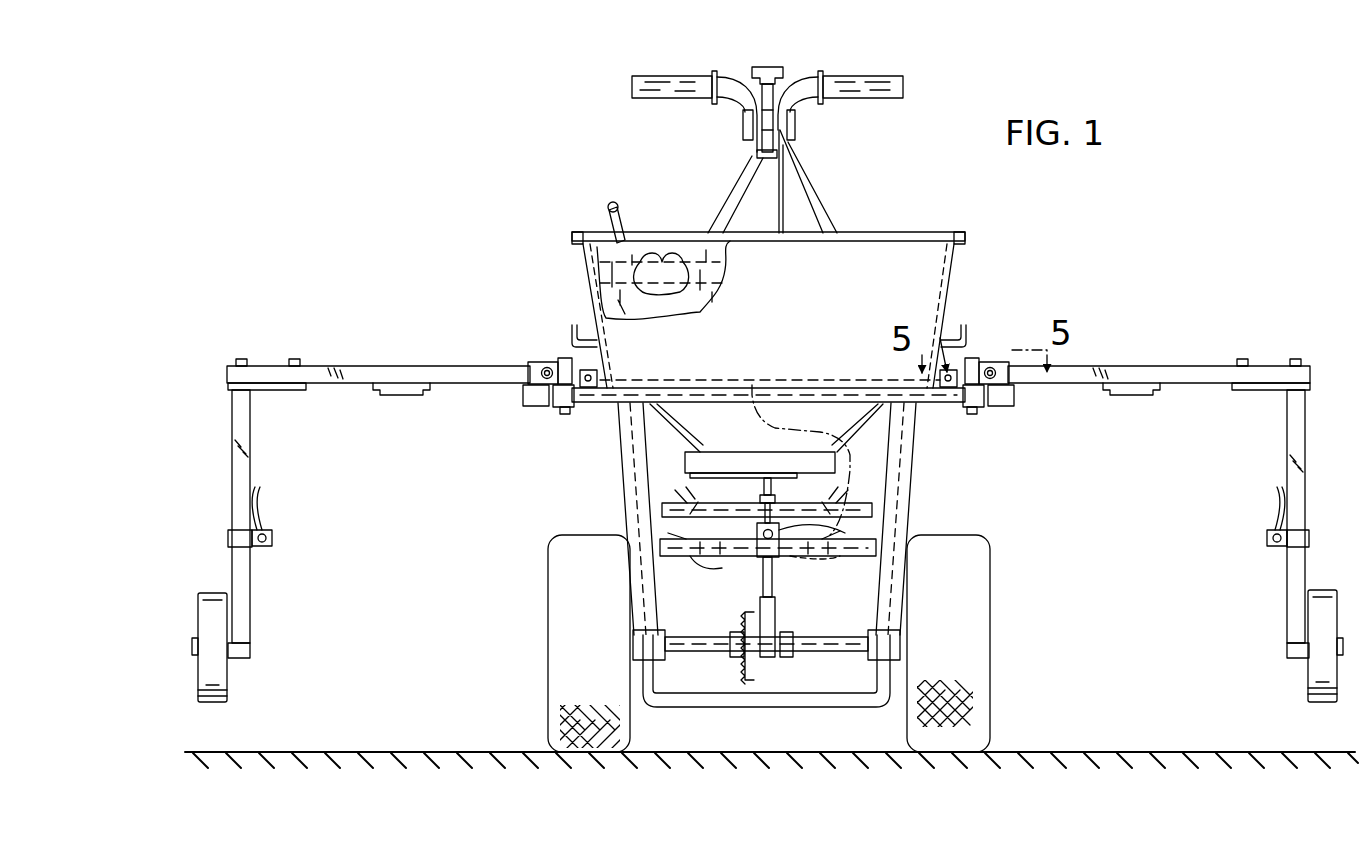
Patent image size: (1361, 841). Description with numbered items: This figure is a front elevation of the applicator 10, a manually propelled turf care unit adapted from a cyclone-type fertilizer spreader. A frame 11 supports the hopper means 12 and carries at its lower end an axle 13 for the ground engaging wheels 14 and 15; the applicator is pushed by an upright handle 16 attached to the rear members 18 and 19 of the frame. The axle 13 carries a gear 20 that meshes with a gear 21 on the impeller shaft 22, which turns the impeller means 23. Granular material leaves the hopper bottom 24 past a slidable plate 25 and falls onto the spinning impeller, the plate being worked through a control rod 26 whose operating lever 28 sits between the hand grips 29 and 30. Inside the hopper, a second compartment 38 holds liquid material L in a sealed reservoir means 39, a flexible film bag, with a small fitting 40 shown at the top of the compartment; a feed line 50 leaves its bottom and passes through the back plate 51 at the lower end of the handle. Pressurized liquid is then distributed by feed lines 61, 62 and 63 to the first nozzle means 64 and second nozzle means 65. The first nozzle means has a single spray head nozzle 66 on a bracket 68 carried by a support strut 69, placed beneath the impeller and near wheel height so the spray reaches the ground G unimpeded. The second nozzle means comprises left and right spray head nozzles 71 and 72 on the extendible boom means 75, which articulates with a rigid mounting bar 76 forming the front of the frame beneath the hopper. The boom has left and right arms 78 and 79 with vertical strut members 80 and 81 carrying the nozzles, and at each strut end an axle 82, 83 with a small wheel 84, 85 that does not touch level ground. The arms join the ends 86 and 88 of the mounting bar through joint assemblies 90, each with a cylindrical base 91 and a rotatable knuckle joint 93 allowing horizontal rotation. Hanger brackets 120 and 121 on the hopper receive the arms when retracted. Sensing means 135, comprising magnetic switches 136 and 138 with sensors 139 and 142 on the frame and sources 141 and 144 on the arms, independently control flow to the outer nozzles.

The applicator 10 is at (1100, 227).
The frame 11 is at (918, 470).
The hopper means 12 is at (902, 232).
The axle 13 is at (832, 645).
The ground engaging wheel 14 is at (548, 665).
The ground engaging wheel 15 is at (975, 675).
The upright handle 16 is at (808, 182).
The rear member 18 is at (640, 468).
The rear member 19 is at (903, 448).
The gear 20 is at (752, 680).
The gear 21 is at (786, 626).
The impeller shaft 22 is at (773, 590).
The impeller means 23 is at (878, 510).
The hopper bottom 24 is at (720, 462).
The slidable plate 25 is at (738, 490).
The control rod 26 is at (782, 213).
The operating lever 28 is at (776, 70).
The hand grip 29 is at (650, 92).
The hand grip 30 is at (880, 96).
The second compartment 38 is at (593, 236).
The sealed reservoir means 39 is at (683, 240).
The fill pipe 40 is at (616, 203).
The feed line 50 is at (768, 417).
The back plate 51 is at (660, 468).
The feed line 61 is at (260, 512).
The feed line 62 is at (790, 535).
The feed line 63 is at (1277, 512).
The first nozzle means 64 is at (752, 554).
The second nozzle means 65 is at (270, 556).
The spray head nozzle 66 is at (760, 528).
The bracket 68 is at (762, 556).
The support strut 69 is at (866, 548).
The left spray head nozzle 71 is at (275, 540).
The right spray head nozzle 72 is at (1265, 540).
The extendible boom means 75 is at (355, 364).
The rigid mounting bar 76 is at (711, 386).
The left arm 78 is at (447, 364).
The right arm 79 is at (1133, 364).
The strut member 80 is at (250, 440).
The strut member 81 is at (1295, 437).
The axle 82 is at (250, 645).
The axle 83 is at (1306, 646).
The wheel 84 is at (222, 690).
The wheel 85 is at (1312, 690).
The end of mounting bar 86 is at (581, 398).
The end of mounting bar 88 is at (889, 428).
The joint assembly 90 is at (546, 360).
The cylindrical base 91 is at (563, 405).
The rotatable knuckle joint 93 is at (528, 396).
The hanger bracket 120 is at (574, 322).
The hanger bracket 121 is at (965, 322).
The sensing means 135 is at (606, 380).
The magnetic switch 136 is at (592, 368).
The magnetic switch 138 is at (940, 338).
The sensor 139 is at (557, 393).
The source 141 is at (402, 396).
The sensor 142 is at (984, 392).
The source 144 is at (1138, 396).
The ground G is at (1103, 752).
The liquid material L is at (659, 270).